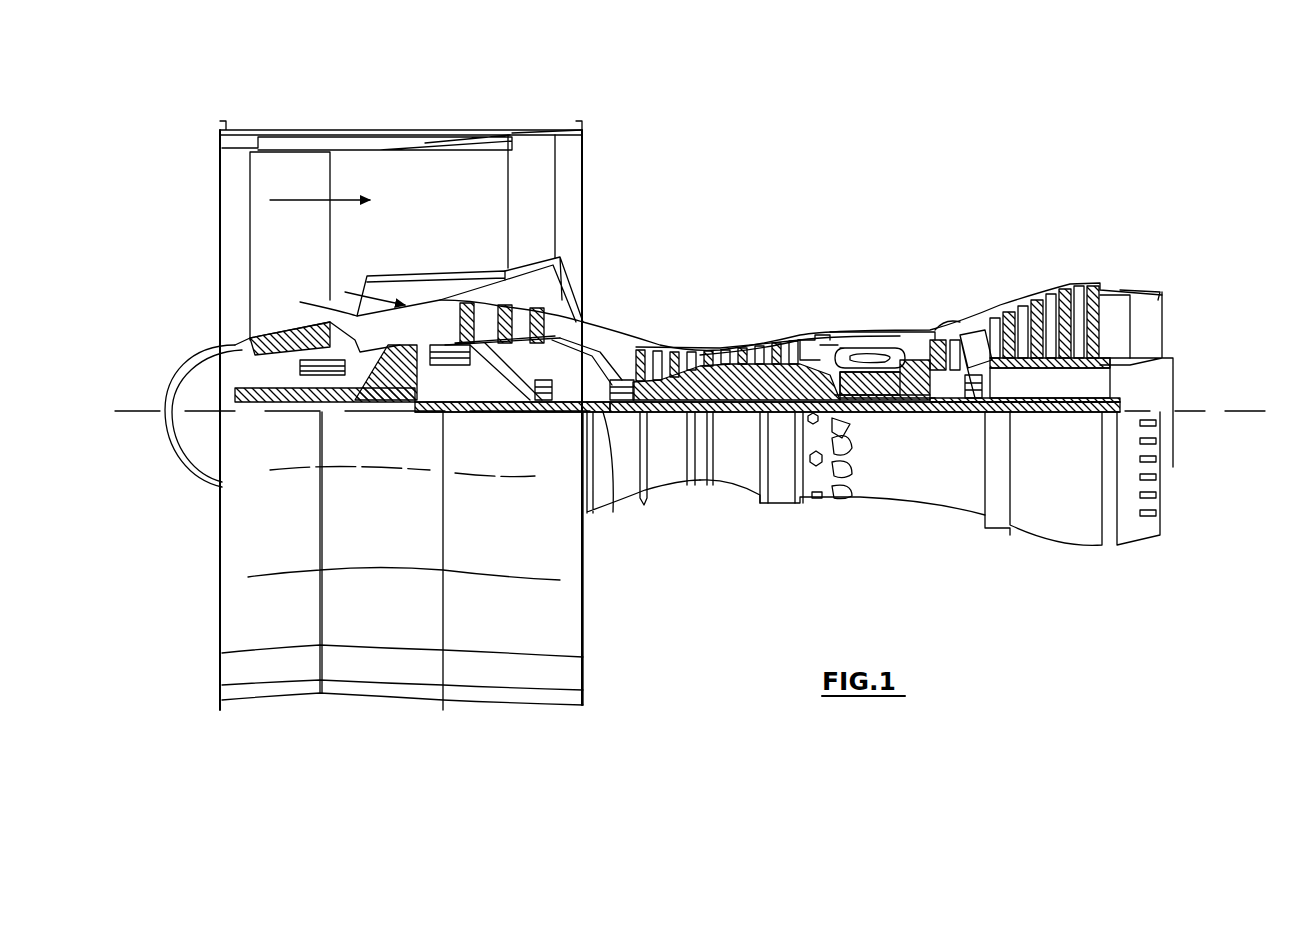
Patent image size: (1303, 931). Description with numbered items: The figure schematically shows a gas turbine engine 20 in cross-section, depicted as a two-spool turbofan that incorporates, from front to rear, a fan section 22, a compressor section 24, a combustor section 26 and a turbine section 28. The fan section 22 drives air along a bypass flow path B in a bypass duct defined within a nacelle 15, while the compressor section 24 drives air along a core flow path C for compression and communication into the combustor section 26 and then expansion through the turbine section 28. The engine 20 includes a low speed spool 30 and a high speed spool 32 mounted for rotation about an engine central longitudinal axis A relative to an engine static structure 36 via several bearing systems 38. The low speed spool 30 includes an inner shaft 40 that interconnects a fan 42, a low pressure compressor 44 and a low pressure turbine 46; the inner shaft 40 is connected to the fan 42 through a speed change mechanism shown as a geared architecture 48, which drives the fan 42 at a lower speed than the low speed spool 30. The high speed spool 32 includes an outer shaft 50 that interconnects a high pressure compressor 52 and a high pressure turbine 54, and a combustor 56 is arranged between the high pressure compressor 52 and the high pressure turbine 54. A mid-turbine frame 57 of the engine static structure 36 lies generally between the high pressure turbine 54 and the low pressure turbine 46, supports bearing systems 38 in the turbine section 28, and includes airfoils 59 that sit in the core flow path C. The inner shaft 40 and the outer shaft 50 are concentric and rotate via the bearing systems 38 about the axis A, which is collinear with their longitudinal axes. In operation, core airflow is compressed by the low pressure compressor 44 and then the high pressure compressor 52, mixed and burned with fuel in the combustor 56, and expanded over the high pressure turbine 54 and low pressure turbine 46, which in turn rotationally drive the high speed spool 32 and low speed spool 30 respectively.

The gas turbine engine 20 is at (860, 180).
The fan section 22 is at (336, 118).
The compressor section 24 is at (635, 320).
The combustor section 26 is at (855, 305).
The turbine section 28 is at (1003, 268).
The low speed spool 30 is at (740, 413).
The high speed spool 32 is at (782, 345).
The engine static structure 36 is at (780, 500).
The bearing systems 38 is at (542, 402).
The inner shaft 40 is at (600, 415).
The fan 42 is at (305, 257).
The low pressure compressor 44 is at (510, 320).
The low pressure turbine 46 is at (1050, 300).
The geared architecture 48 is at (408, 396).
The outer shaft 50 is at (858, 405).
The high pressure compressor 52 is at (705, 345).
The high pressure turbine 54 is at (927, 340).
The combustor 56 is at (862, 355).
The mid-turbine frame 57 is at (965, 320).
The airfoils 59 is at (995, 380).
The nacelle 15 is at (398, 132).
The engine central longitudinal axis A is at (1265, 411).
The bypass flow path B is at (305, 200).
The core flow path C is at (345, 292).